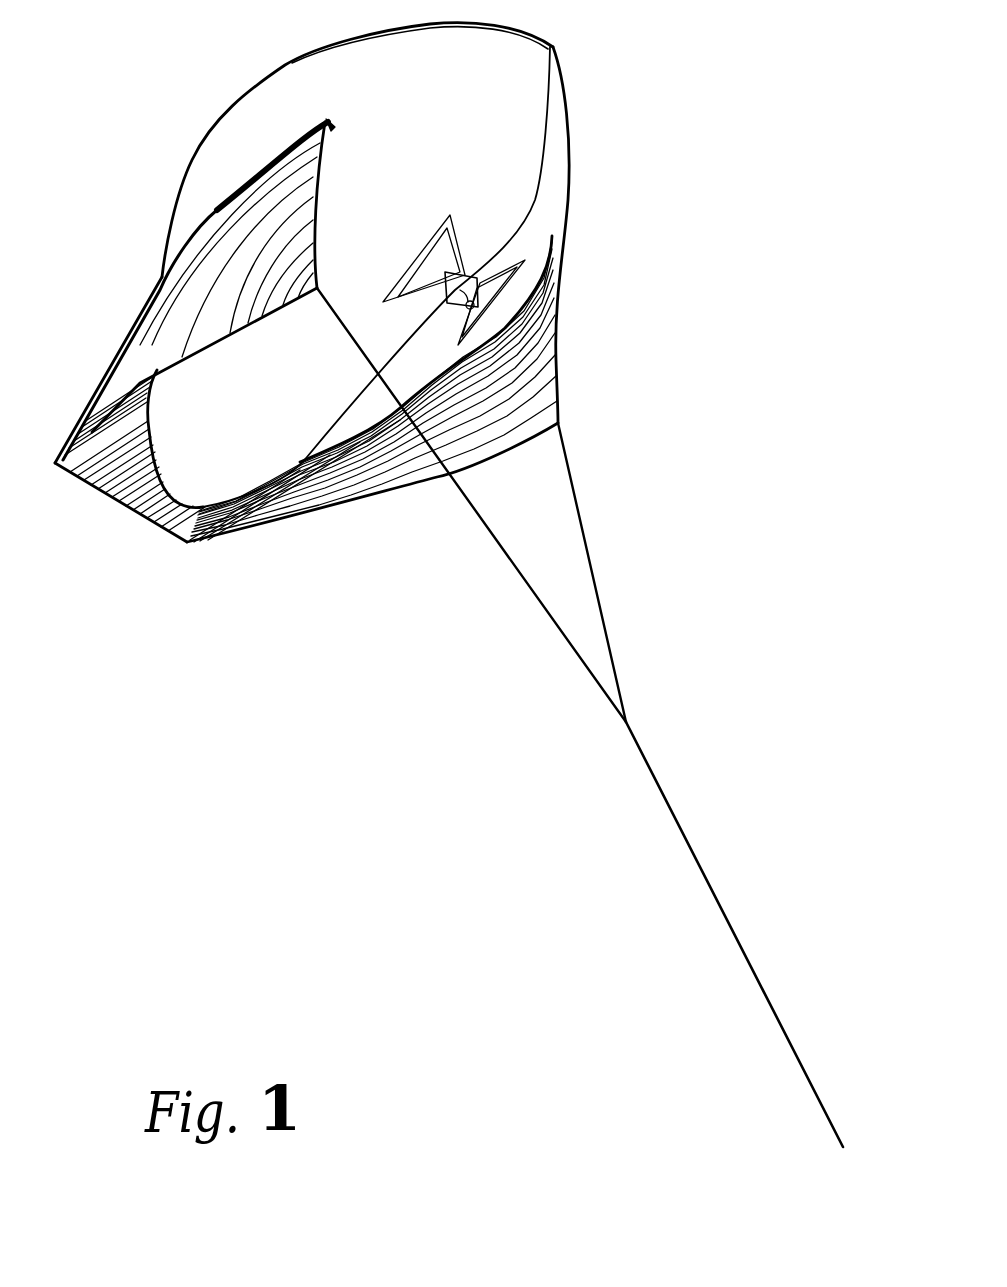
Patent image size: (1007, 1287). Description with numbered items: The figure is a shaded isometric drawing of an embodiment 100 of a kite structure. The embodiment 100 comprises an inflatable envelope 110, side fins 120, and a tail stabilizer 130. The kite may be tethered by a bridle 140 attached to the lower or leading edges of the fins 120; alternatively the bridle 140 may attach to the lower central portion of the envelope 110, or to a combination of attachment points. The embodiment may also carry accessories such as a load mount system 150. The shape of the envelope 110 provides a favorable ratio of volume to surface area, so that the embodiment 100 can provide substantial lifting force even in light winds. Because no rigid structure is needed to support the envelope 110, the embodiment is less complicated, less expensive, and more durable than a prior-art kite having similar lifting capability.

The embodiment 100 is at (155, 96).
The inflatable envelope 110 is at (583, 122).
The side fins 120 is at (564, 380).
The tail stabilizer 130 is at (166, 539).
The bridle 140 is at (704, 892).
The load mount system 150 is at (430, 239).